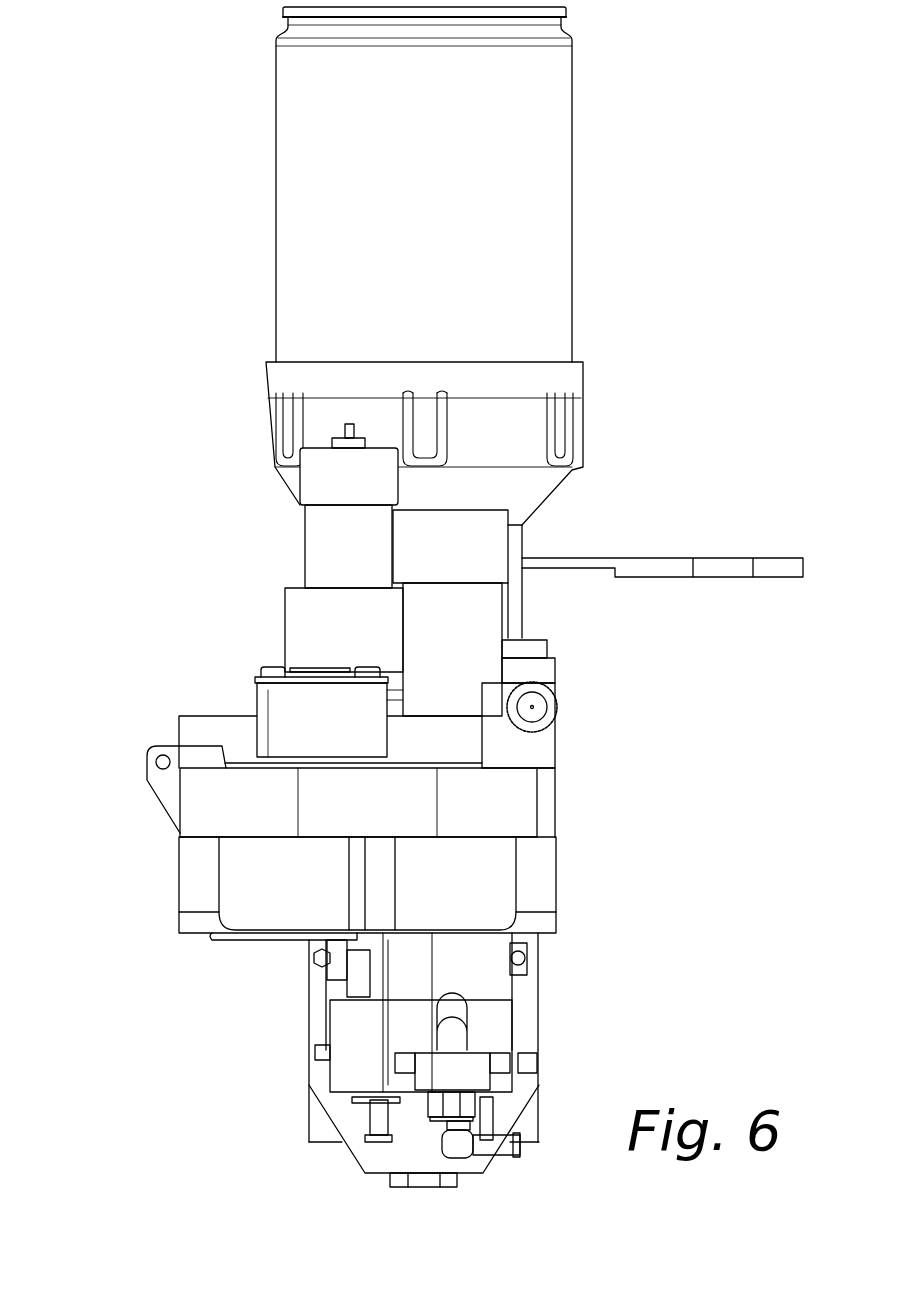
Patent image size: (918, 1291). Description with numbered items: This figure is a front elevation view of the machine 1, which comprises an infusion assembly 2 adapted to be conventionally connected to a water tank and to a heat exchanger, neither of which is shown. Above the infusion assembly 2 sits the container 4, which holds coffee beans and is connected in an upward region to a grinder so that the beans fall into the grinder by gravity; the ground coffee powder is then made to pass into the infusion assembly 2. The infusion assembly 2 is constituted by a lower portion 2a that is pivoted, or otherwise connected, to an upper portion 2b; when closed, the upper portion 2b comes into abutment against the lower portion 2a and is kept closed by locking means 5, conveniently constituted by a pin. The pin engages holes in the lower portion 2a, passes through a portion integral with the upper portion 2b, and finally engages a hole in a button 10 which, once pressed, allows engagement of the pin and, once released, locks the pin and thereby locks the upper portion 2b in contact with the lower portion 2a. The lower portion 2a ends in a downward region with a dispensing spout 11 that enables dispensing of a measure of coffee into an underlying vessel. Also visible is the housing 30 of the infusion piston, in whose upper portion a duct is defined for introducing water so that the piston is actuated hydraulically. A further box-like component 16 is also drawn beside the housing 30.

The machine 1 is at (138, 648).
The infusion assembly 2 is at (155, 915).
The lower portion 2a is at (202, 809).
The upper portion 2b is at (233, 728).
The container 4 is at (320, 157).
The locking means 5 is at (550, 705).
The button 10 is at (543, 675).
The dispensing spout 11 is at (452, 1008).
The sensor box 16 is at (323, 487).
The housing 30 is at (458, 548).